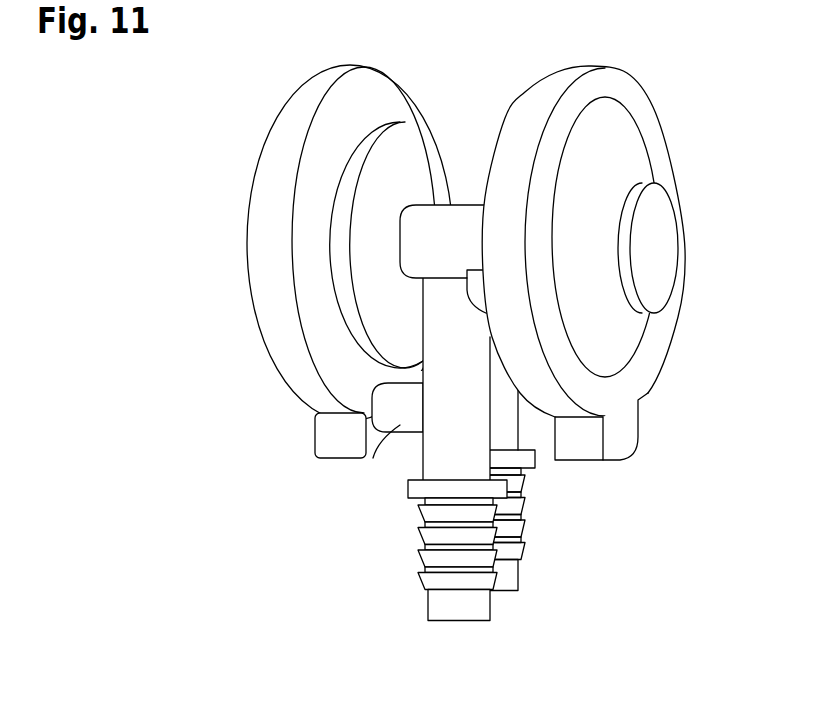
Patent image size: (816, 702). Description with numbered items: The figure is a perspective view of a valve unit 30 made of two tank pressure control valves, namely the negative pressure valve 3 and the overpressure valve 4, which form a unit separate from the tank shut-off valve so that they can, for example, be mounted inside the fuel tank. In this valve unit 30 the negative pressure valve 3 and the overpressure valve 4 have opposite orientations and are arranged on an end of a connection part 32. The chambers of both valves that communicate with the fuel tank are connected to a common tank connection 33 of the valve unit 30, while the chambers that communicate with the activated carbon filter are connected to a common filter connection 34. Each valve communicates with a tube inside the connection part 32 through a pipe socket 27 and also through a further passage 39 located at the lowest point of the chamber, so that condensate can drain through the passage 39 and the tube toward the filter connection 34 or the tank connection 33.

The negative pressure valve 3 is at (262, 155).
The overpressure valve 4 is at (652, 105).
The pipe socket 27 is at (447, 242).
The valve unit 30 is at (492, 77).
The connection part 32 is at (453, 424).
The tank connection 33 is at (438, 610).
The filter connection 34 is at (517, 547).
The further passage 39 is at (402, 412).